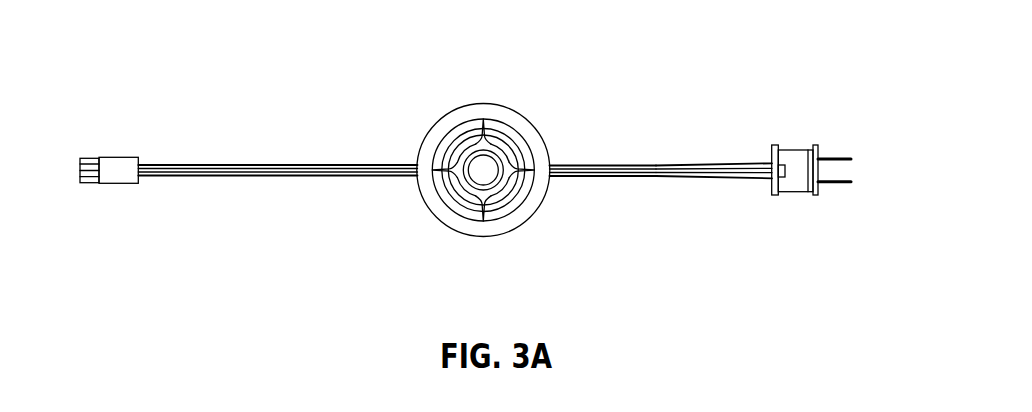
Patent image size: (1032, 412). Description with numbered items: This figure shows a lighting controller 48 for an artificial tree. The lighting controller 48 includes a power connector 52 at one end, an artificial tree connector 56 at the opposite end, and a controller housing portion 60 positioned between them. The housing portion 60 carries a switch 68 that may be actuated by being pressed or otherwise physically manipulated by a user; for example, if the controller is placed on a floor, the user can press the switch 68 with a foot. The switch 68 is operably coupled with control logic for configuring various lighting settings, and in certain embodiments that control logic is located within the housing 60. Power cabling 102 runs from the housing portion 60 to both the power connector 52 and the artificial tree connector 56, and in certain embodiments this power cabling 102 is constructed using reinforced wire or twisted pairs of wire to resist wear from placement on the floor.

The lighting controller 48 is at (498, 102).
The power connector 52 is at (795, 158).
The artificial tree connector 56 is at (123, 173).
The controller housing portion 60 is at (543, 141).
The switch 68 is at (478, 165).
The power cabling 102 is at (267, 173).